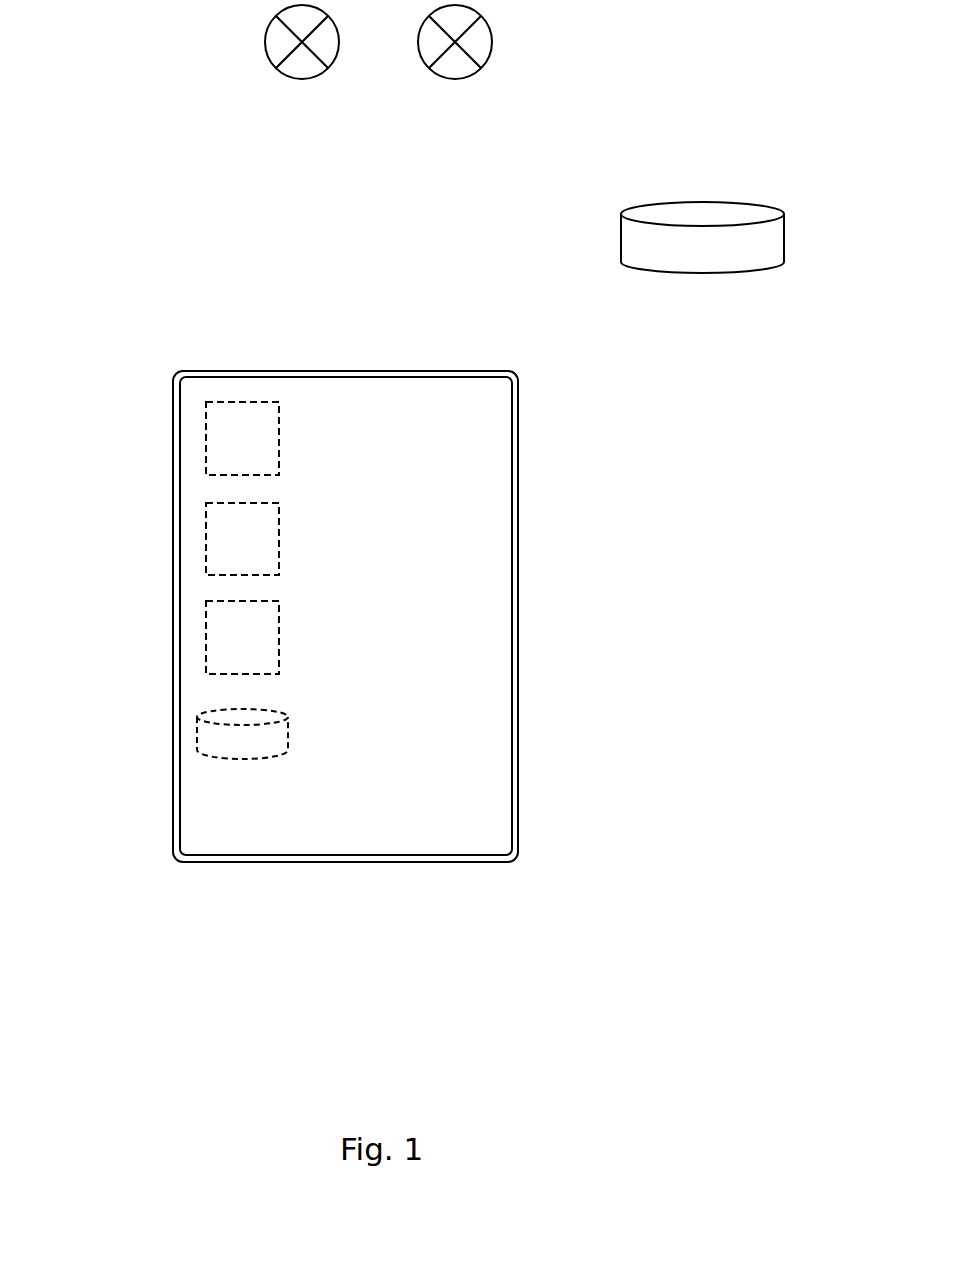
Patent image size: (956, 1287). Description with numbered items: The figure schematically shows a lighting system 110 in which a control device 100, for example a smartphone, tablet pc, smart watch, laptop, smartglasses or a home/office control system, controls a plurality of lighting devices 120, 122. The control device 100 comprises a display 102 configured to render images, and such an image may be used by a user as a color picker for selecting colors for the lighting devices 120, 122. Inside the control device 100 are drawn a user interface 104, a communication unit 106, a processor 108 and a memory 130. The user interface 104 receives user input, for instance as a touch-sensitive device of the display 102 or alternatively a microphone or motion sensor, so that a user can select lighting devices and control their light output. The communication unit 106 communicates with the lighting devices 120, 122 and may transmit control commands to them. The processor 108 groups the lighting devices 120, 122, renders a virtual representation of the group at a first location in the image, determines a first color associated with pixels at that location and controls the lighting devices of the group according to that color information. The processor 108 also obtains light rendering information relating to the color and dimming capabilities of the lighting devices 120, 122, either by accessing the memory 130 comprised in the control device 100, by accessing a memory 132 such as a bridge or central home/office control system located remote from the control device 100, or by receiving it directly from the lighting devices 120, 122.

The control device 100 is at (242, 863).
The display 102 is at (322, 845).
The user interface 104 is at (220, 439).
The communication unit 106 is at (220, 539).
The processor 108 is at (220, 638).
The lighting system 110 is at (408, 1040).
The lighting device 120 is at (303, 82).
The lighting device 122 is at (453, 82).
The memory 130 is at (220, 736).
The memory 132 is at (640, 245).